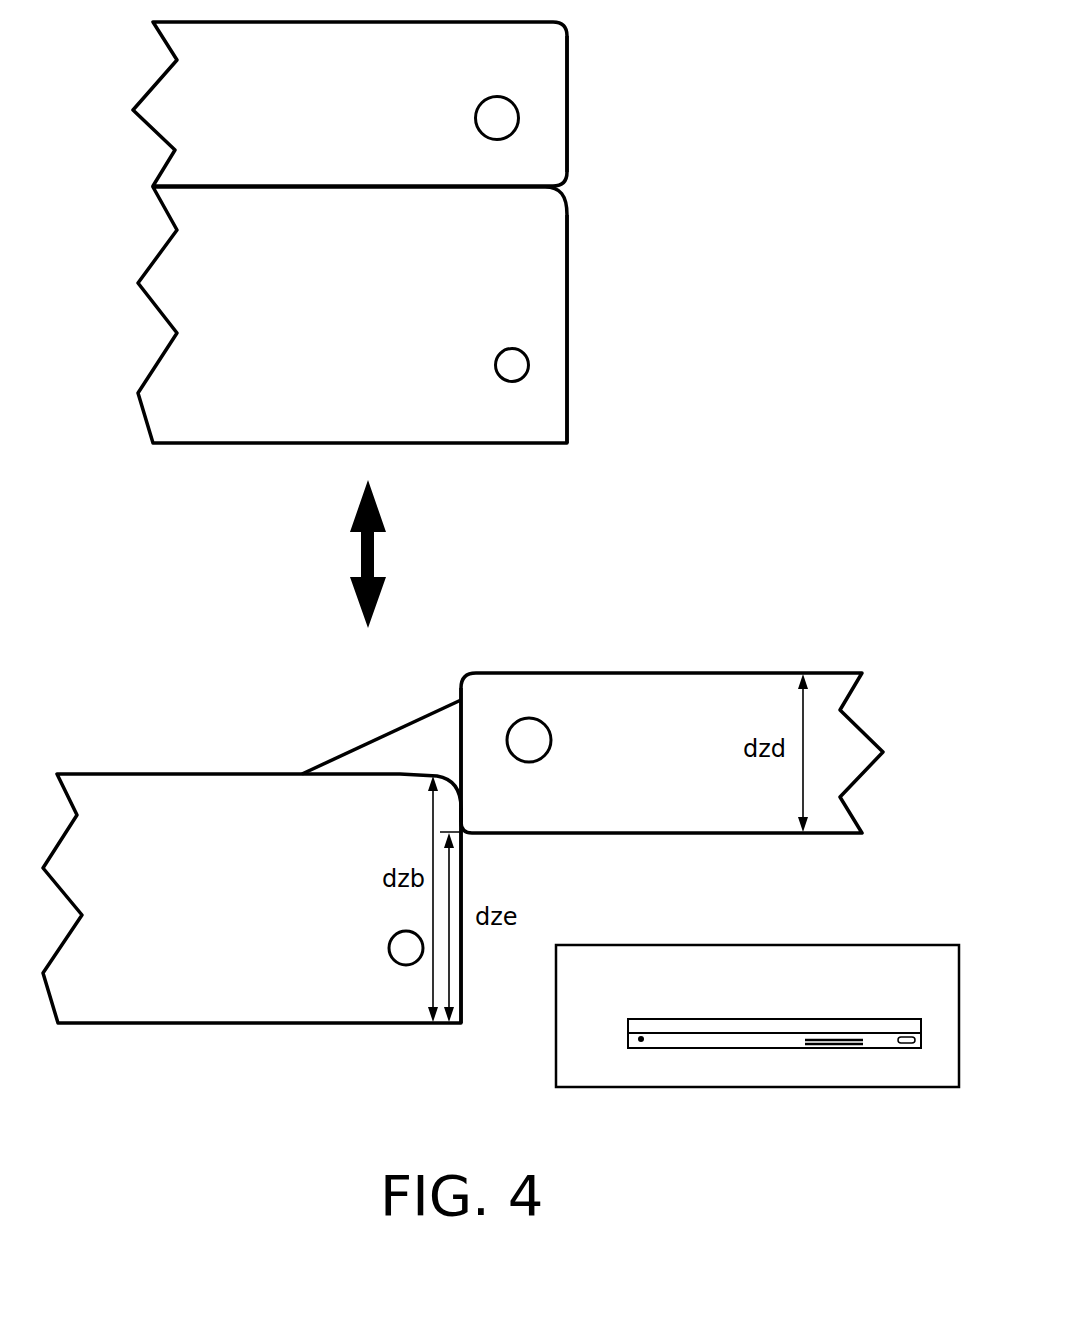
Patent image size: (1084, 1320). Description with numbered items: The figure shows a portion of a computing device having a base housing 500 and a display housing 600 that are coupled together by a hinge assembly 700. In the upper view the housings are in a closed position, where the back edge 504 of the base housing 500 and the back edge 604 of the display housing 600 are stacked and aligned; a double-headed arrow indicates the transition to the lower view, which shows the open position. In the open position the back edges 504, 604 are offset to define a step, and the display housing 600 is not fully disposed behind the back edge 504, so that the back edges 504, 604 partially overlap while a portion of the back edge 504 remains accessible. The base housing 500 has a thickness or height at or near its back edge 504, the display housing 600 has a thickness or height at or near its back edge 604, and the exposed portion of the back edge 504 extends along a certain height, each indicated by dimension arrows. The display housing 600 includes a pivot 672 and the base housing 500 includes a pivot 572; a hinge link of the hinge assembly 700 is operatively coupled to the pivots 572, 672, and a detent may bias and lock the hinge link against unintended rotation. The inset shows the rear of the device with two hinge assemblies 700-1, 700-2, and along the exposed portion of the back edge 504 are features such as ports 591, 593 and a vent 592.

The base housing 500 is at (737, 1070).
The back edge 504 is at (568, 297).
The pivot 572 is at (498, 355).
The port 591 is at (645, 1046).
The vent 592 is at (828, 1046).
The port 593 is at (910, 1046).
The display housing 600 is at (750, 1018).
The back edge 604 is at (567, 92).
The pivot 672 is at (478, 131).
The hinge assembly 700 is at (298, 711).
The hinge assembly 700-1 is at (684, 1002).
The hinge assembly 700-2 is at (886, 1002).